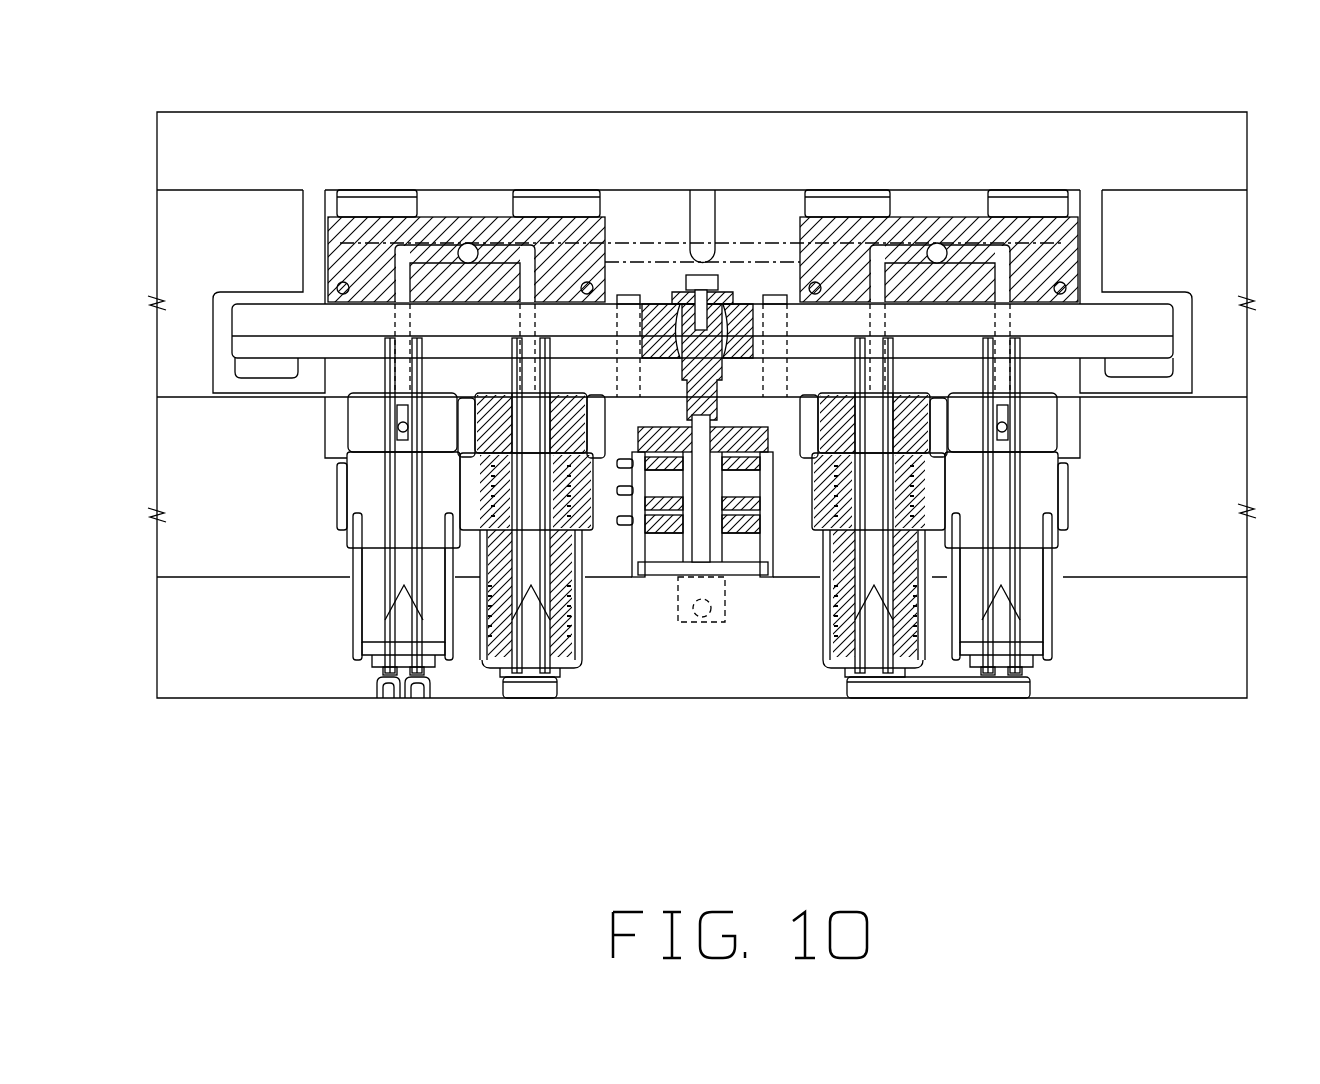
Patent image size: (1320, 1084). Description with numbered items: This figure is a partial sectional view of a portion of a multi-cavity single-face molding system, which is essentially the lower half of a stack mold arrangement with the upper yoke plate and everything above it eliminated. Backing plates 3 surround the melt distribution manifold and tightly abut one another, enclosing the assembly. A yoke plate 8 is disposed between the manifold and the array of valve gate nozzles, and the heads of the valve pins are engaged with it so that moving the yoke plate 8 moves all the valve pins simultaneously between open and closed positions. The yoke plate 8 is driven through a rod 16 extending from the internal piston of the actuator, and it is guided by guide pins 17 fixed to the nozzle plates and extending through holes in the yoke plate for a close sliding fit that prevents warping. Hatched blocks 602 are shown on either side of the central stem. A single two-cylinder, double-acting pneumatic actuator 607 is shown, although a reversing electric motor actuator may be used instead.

The backing plate 3 is at (175, 240).
The yoke plate 8 is at (1163, 327).
The rod 16 is at (714, 263).
The guide pin 17 is at (630, 293).
The distributor block 602 is at (468, 230).
The pneumatic actuator 607 is at (745, 555).